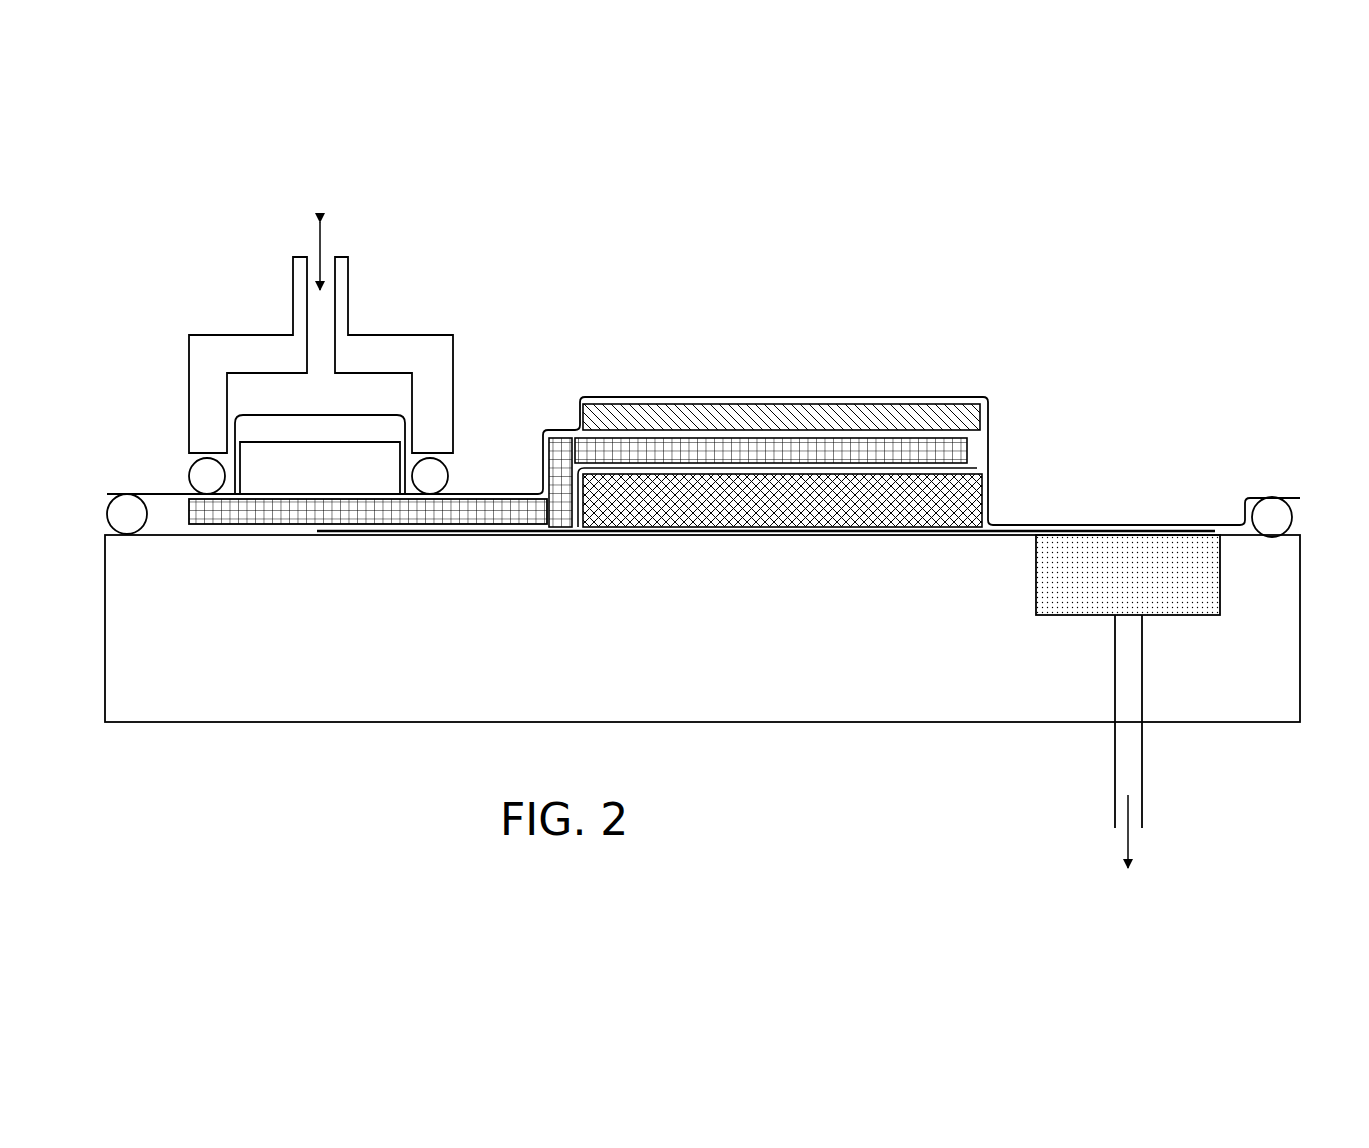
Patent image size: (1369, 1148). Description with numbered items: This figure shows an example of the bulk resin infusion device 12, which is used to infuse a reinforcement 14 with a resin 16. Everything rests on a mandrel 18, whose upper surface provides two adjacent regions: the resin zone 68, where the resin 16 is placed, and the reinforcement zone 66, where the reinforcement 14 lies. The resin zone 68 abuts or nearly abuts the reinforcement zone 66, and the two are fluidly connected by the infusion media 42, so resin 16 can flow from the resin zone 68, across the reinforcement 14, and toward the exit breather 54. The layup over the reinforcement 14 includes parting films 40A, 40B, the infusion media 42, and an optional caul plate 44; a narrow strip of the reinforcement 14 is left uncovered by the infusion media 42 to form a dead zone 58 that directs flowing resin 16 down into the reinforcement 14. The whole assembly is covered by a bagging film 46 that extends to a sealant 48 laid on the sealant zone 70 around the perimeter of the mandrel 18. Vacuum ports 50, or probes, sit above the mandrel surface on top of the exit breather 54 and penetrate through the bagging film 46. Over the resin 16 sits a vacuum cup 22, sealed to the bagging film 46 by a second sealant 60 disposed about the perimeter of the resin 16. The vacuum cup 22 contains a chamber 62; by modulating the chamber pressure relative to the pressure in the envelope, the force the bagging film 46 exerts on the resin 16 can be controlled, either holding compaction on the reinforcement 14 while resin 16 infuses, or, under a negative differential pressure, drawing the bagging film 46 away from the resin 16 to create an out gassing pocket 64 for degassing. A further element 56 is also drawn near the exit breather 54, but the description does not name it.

The BRI device 12 is at (921, 99).
The reinforcement 14 is at (983, 495).
The resin 16 is at (400, 440).
The mandrel 18 is at (1042, 525).
The vacuum cup 22 is at (349, 270).
The parting film 40A is at (908, 468).
The parting film 40B is at (1140, 525).
The infusion media 42 is at (830, 437).
The caul plate 44 is at (740, 404).
The bagging film 46 is at (690, 397).
The sealant 48 is at (106, 513).
The vacuum ports 50 is at (1115, 775).
The exit breather 54 is at (1036, 588).
The belt 56 is at (1015, 548).
The dead zone 58 is at (973, 486).
The sealant 60 is at (188, 477).
The chamber 62 is at (325, 399).
The out gassing pocket 64 is at (250, 426).
The reinforcement zone 66 is at (757, 540).
The resin zone 68 is at (307, 540).
The sealant zone 70 is at (133, 538).